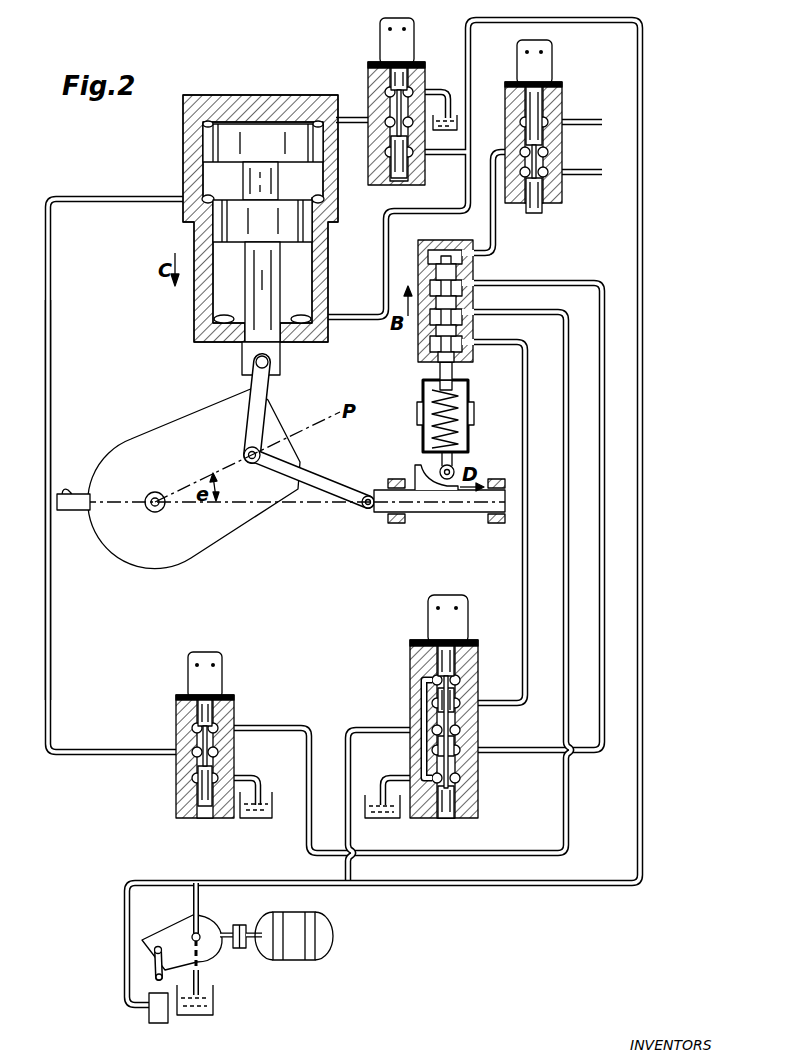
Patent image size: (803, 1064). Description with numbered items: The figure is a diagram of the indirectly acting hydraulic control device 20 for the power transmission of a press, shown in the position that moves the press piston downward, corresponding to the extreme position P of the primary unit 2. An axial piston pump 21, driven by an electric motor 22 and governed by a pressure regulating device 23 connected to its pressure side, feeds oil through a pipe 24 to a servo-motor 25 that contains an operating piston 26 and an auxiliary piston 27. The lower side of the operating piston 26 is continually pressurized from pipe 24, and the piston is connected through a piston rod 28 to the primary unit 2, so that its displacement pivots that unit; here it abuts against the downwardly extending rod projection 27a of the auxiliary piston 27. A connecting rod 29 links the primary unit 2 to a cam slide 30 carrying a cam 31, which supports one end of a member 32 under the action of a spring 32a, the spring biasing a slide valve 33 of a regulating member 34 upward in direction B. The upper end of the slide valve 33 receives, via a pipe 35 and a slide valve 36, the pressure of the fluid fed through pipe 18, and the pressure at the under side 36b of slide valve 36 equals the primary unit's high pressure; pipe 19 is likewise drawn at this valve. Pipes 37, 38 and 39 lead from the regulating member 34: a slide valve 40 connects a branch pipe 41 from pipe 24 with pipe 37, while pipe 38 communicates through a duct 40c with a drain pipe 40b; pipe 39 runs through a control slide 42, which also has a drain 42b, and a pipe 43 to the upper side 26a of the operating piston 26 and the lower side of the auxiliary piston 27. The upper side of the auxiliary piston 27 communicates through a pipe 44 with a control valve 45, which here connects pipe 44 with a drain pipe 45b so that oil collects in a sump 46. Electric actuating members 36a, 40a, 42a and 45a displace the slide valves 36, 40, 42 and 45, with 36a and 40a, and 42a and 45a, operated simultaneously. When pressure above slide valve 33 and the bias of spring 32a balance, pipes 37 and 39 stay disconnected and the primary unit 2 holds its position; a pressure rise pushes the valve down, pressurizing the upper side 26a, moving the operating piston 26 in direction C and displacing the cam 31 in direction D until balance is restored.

The primary unit 2 is at (148, 571).
The pipe 18 is at (587, 177).
The pipe 19 is at (588, 121).
The control device 20 is at (146, 187).
The axial piston pump 21 is at (170, 937).
The electric motor 22 is at (297, 961).
The pressure regulating device 23 is at (152, 992).
The pipe 24 is at (384, 280).
The servo-motor 25 is at (189, 147).
The operating piston 26 is at (300, 228).
The upper side of operating piston 26a is at (308, 201).
The auxiliary piston 27 is at (226, 128).
The rod projection 27a is at (248, 191).
The piston rod 28 is at (267, 389).
The connecting rod 29 is at (335, 484).
The cam slide 30 is at (453, 513).
The cam 31 is at (416, 468).
The member 32 is at (469, 447).
The spring 32a is at (422, 401).
The slide valve 33 is at (455, 372).
The regulating member 34 is at (476, 262).
The pipe 35 is at (495, 228).
The slide valve 36 is at (530, 96).
The electric actuating member 36a is at (553, 58).
The under side of slide valve 36 36b is at (548, 152).
The pipe 37 is at (601, 349).
The pipe 38 is at (524, 427).
The pipe 39 is at (564, 471).
The slide valve 40 is at (460, 661).
The electric actuating member 40a is at (432, 598).
The drain pipe 40b is at (386, 782).
The duct 40c is at (423, 690).
The branch pipe 41 is at (360, 730).
The control slide 42 is at (205, 812).
The electric actuating member 42a is at (241, 646).
The drain reservoir 42b is at (260, 790).
The pipe 43 is at (48, 333).
The pipe 44 is at (358, 112).
The control valve 45 is at (404, 154).
The electric actuating member 45a is at (380, 34).
The drain pipe 45b is at (448, 91).
The sump 46 is at (454, 121).